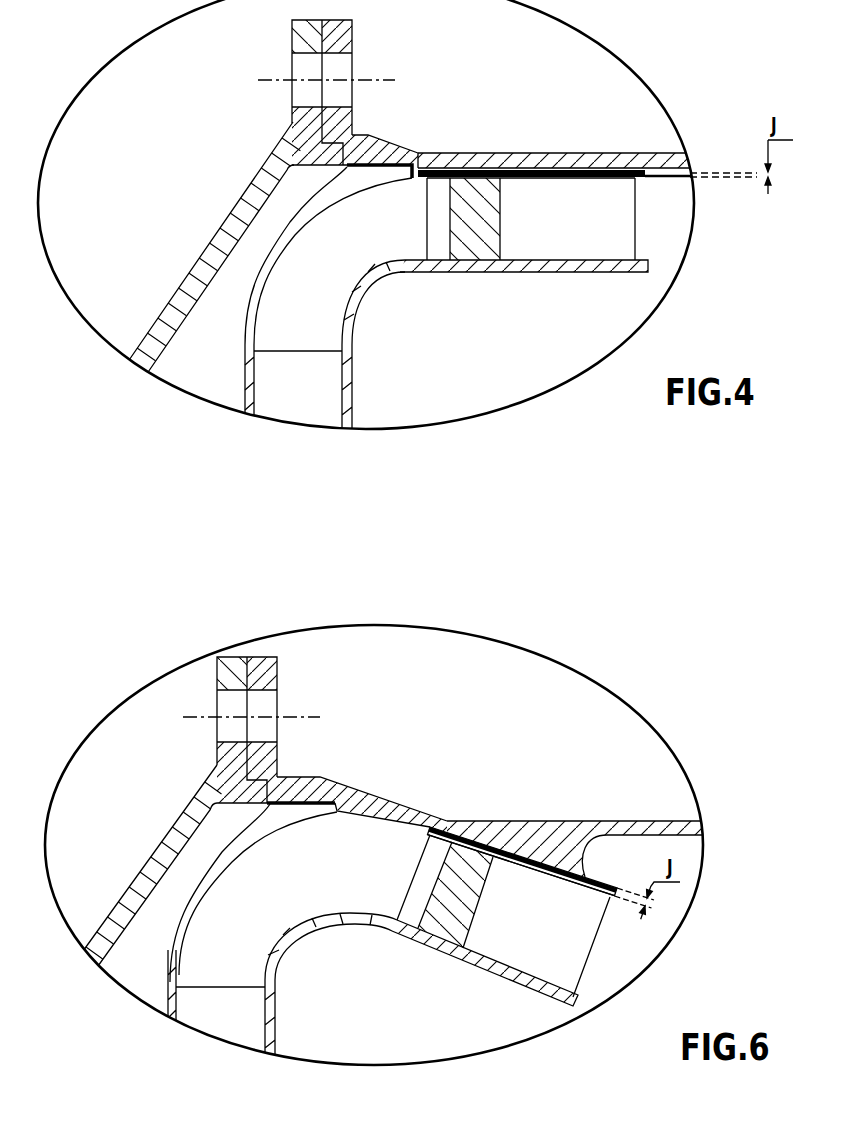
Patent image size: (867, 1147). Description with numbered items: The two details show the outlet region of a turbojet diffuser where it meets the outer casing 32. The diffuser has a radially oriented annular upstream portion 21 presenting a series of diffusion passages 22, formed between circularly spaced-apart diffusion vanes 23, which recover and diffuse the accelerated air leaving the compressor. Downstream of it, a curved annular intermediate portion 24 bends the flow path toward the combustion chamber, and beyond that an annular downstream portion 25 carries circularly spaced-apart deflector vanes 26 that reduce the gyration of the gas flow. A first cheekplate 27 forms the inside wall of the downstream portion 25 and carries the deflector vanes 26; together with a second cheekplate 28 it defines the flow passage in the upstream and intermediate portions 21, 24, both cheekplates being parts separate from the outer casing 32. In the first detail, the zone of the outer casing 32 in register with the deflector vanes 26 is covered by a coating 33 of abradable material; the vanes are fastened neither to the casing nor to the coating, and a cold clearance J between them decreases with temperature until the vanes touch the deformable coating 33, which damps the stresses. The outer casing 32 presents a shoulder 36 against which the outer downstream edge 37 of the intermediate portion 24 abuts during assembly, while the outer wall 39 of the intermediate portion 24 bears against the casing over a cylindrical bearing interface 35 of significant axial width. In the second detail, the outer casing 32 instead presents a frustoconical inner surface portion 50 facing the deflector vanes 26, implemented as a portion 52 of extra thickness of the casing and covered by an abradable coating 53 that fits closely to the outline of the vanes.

In FIG. 4, the annular upstream portion 21 is at (352, 397).
In FIG. 6, the annular upstream portion 21 is at (280, 1033).
In FIG. 4, the diffusion passages 22 is at (308, 400).
In FIG. 4, the diffusion vanes 23 is at (278, 352).
In FIG. 4, the curved annular intermediate portion 24 is at (268, 245).
In FIG. 6, the curved annular intermediate portion 24 is at (190, 875).
In FIG. 4, the annular downstream portion 25 is at (497, 273).
In FIG. 6, the annular downstream portion 25 is at (443, 957).
In FIG. 4, the deflector vanes 26 is at (487, 225).
In FIG. 6, the deflector vanes 26 is at (457, 890).
In FIG. 4, the first cheekplate 27 is at (376, 284).
In FIG. 4, the second cheekplate 28 is at (245, 386).
In FIG. 4, the outer casing 32 is at (546, 161).
In FIG. 6, the outer casing 32 is at (641, 821).
In FIG. 4, the coating of abradable material 33 is at (611, 160).
In FIG. 4, the bearing interface 35 is at (368, 145).
In FIG. 6, the bearing interface 35 is at (313, 800).
In FIG. 4, the shoulder 36 is at (422, 151).
In FIG. 6, the shoulder 36 is at (350, 810).
In FIG. 4, the outer downstream edge 37 is at (397, 158).
In FIG. 6, the outer downstream edge 37 is at (330, 815).
In FIG. 4, the outer wall 39 is at (378, 170).
In FIG. 6, the outer wall 39 is at (303, 812).
In FIG. 6, the frustoconical inner surface portion 50 is at (538, 877).
In FIG. 6, the portion of extra thickness 52 is at (560, 853).
In FIG. 6, the abradable coating 53 is at (490, 845).